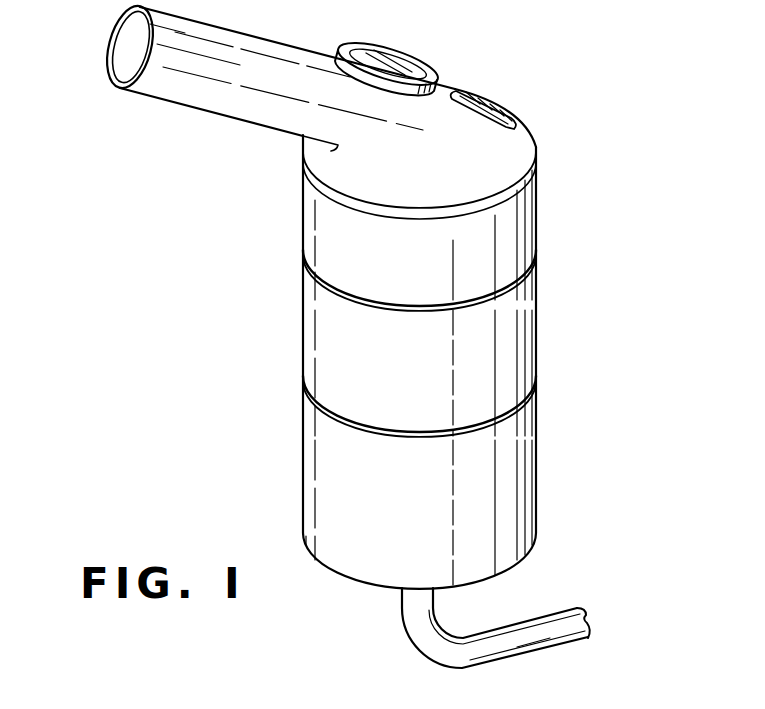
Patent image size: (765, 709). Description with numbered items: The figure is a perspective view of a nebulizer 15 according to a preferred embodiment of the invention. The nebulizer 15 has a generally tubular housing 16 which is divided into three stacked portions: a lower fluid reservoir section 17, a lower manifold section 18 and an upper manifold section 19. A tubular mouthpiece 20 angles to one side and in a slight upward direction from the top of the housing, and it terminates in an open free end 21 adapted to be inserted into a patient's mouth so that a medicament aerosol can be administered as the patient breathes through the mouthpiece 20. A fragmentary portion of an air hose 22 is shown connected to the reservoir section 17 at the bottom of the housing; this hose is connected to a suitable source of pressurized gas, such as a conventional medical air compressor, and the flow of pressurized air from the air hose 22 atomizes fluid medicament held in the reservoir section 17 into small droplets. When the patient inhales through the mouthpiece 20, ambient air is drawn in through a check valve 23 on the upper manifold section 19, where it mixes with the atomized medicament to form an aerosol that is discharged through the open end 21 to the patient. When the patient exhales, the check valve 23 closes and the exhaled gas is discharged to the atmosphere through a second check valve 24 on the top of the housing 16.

The nebulizer 15 is at (600, 92).
The housing 16 is at (538, 292).
The lower fluid reservoir section 17 is at (307, 453).
The lower manifold section 18 is at (307, 333).
The upper manifold section 19 is at (307, 218).
The tubular mouthpiece 20 is at (207, 111).
The open free end 21 is at (115, 72).
The air hose 22 is at (562, 610).
The check valve 23 is at (493, 100).
The check valve 24 is at (390, 52).